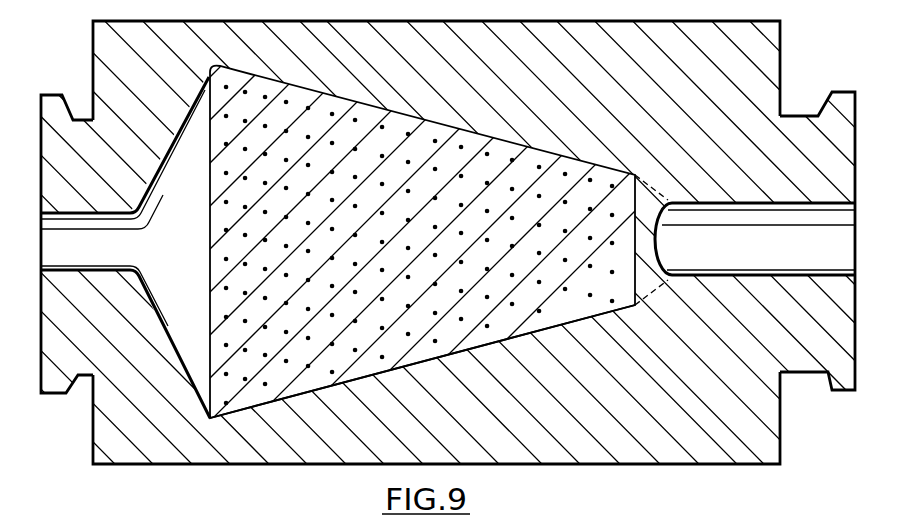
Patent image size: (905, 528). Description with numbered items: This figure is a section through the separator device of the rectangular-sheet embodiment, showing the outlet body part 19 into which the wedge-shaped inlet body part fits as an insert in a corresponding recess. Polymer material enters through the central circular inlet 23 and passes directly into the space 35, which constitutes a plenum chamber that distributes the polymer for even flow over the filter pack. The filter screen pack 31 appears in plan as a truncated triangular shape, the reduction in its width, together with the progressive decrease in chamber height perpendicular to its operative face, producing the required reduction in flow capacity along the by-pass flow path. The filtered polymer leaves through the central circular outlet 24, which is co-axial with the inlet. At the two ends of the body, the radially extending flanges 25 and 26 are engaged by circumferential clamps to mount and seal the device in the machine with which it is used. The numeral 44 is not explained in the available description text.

The outlet body part 19 is at (620, 404).
The central circular inlet 23 is at (55, 247).
The central circular outlet 24 is at (841, 251).
The radially extending flange 25 is at (53, 393).
The radially extending flange 26 is at (845, 103).
The filter screen pack 31 is at (427, 353).
The space 35 is at (185, 252).
The passage liner 44 is at (800, 258).